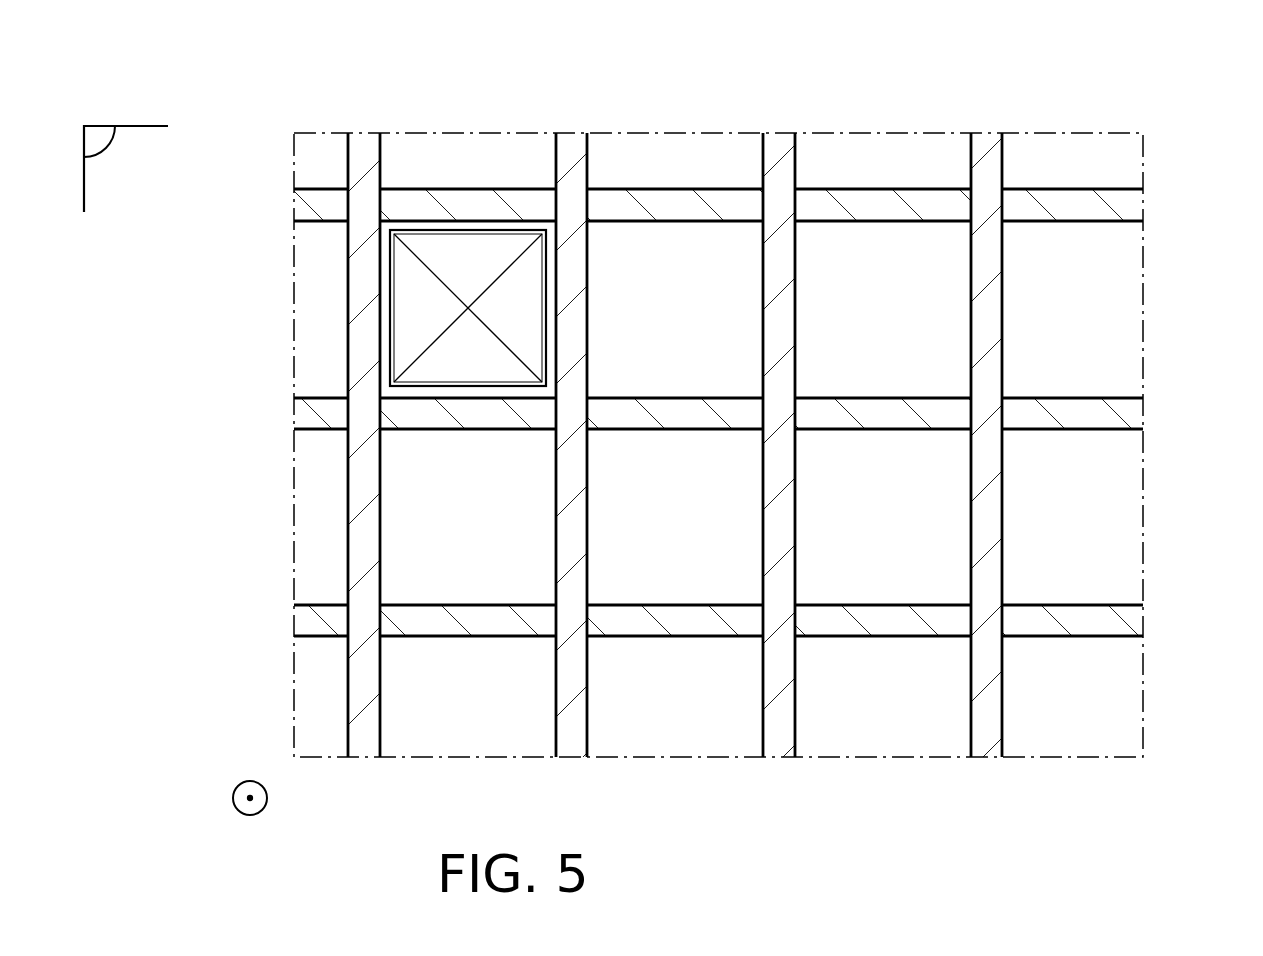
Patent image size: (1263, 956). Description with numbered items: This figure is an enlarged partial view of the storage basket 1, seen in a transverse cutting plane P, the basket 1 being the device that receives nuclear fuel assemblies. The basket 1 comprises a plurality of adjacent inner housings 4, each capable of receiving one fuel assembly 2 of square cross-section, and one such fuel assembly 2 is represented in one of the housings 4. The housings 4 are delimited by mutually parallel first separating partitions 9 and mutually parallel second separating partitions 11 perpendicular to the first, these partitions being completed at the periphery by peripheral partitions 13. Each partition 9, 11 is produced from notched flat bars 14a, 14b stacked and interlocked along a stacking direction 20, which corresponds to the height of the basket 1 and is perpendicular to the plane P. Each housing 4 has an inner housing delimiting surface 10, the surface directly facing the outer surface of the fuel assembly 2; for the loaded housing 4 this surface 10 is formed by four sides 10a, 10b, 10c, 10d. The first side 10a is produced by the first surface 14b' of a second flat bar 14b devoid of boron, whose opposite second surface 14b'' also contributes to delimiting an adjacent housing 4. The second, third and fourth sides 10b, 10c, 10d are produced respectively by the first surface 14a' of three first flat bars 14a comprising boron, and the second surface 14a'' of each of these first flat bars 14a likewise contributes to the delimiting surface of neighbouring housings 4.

The cutting plane P is at (97, 137).
The storage device 1 is at (204, 136).
The nuclear fuel assembly 2 is at (412, 340).
The inner housing 4 is at (332, 175).
The first separating partition 9 is at (365, 762).
The inner housing delimiting surface 10 is at (346, 468).
The first side 10a is at (381, 322).
The second side 10b is at (492, 229).
The third side 10c is at (553, 330).
The fourth side 10d is at (457, 396).
The second separating partition 11 is at (1147, 205).
The peripheral partition 13 is at (266, 390).
The first flat bar 14a is at (683, 478).
The first surface of the first flat bar 14a' is at (396, 296).
The second surface of the first flat bar 14a'' is at (567, 305).
The second flat bar 14b is at (631, 422).
The first surface of the second flat bar 14b' is at (426, 569).
The second surface of the second flat bar 14b'' is at (276, 529).
The stacking direction 20 is at (248, 797).